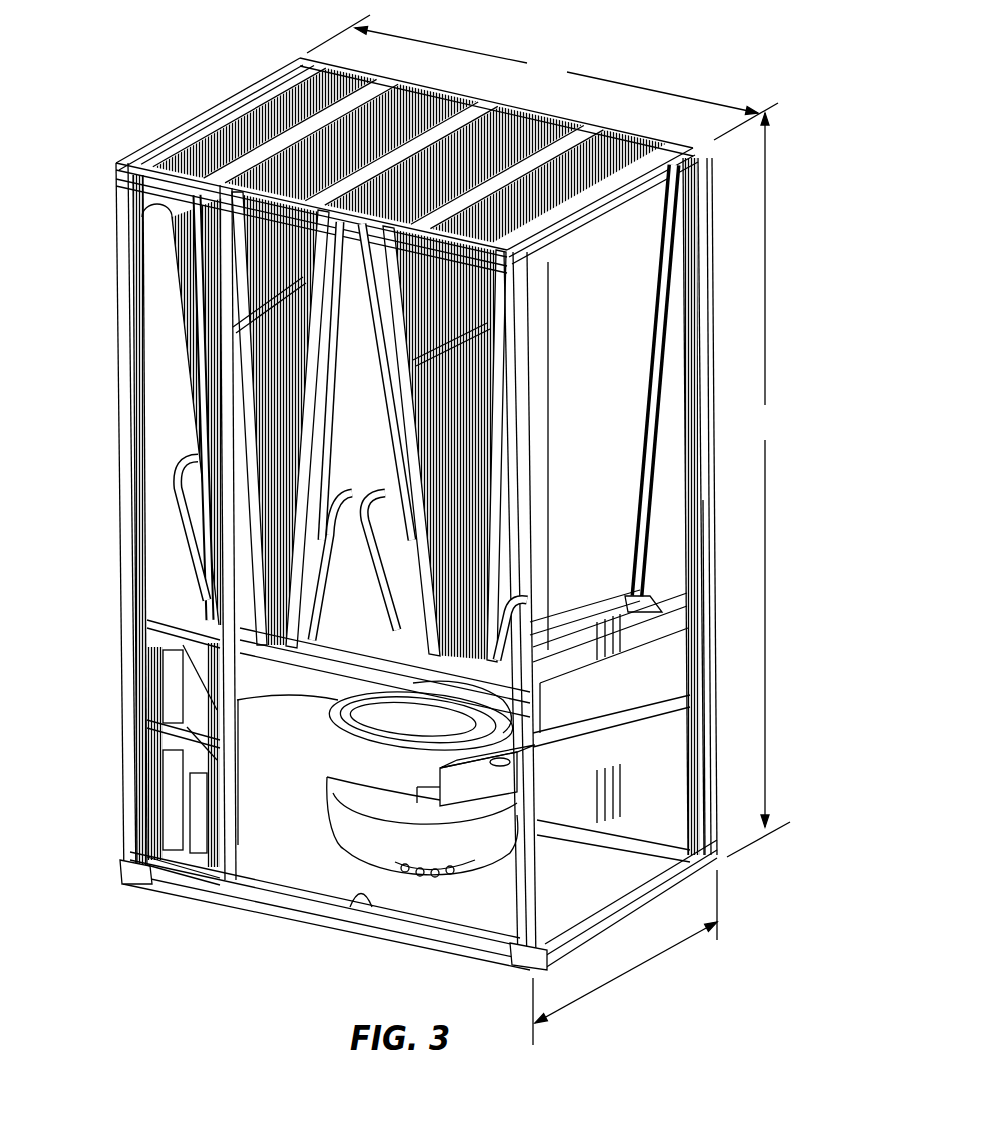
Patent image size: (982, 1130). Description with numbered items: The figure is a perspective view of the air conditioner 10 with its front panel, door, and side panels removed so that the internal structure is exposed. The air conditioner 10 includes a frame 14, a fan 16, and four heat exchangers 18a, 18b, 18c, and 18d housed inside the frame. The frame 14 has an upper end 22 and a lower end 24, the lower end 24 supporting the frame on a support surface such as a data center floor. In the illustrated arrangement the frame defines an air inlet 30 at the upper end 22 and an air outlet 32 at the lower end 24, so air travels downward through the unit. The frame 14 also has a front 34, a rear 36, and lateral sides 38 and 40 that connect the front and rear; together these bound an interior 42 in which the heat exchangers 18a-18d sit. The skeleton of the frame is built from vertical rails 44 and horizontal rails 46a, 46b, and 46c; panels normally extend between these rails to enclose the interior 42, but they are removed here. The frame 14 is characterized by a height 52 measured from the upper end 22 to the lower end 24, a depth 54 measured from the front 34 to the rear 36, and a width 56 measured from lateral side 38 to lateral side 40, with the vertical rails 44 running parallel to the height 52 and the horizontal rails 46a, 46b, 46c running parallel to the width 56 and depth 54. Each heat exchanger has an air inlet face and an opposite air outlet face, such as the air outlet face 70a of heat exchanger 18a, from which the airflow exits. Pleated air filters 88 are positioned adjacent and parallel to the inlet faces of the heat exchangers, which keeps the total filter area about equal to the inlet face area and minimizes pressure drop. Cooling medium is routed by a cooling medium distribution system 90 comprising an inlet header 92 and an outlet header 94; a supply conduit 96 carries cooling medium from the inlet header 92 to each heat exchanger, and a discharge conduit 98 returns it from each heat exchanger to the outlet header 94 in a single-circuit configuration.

The air conditioner 10 is at (806, 178).
The frame 14 is at (709, 496).
The fan 16 is at (340, 812).
The heat exchanger 18a is at (553, 440).
The heat exchanger 18b is at (497, 372).
The heat exchanger 18c is at (400, 170).
The heat exchanger 18d is at (180, 213).
The upper end 22 is at (475, 97).
The lower end 24 is at (290, 920).
The air inlet 30 is at (200, 140).
The air outlet 32 is at (372, 907).
The front 34 is at (122, 452).
The rear 36 is at (711, 402).
The lateral side 38 is at (117, 332).
The lateral side 40 is at (709, 542).
The interior 42 is at (265, 847).
The vertical rails 44 is at (708, 716).
The horizontal rail 46a is at (588, 222).
The horizontal rail 46b is at (657, 657).
The horizontal rail 46c is at (160, 880).
The height 52 is at (758, 485).
The depth 54 is at (625, 957).
The width 56 is at (542, 77).
The air outlet face 70a is at (642, 525).
The air filters 88 is at (273, 137).
The cooling medium distribution system 90 is at (292, 690).
The inlet header 92 is at (332, 675).
The outlet header 94 is at (517, 738).
The supply conduit 96 is at (200, 528).
The discharge conduit 98 is at (405, 460).